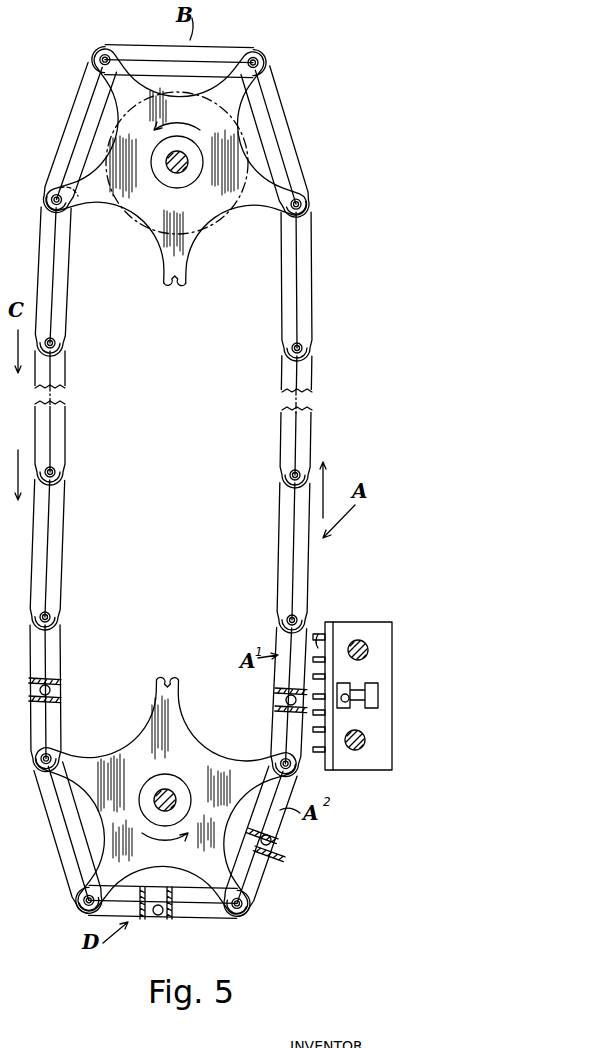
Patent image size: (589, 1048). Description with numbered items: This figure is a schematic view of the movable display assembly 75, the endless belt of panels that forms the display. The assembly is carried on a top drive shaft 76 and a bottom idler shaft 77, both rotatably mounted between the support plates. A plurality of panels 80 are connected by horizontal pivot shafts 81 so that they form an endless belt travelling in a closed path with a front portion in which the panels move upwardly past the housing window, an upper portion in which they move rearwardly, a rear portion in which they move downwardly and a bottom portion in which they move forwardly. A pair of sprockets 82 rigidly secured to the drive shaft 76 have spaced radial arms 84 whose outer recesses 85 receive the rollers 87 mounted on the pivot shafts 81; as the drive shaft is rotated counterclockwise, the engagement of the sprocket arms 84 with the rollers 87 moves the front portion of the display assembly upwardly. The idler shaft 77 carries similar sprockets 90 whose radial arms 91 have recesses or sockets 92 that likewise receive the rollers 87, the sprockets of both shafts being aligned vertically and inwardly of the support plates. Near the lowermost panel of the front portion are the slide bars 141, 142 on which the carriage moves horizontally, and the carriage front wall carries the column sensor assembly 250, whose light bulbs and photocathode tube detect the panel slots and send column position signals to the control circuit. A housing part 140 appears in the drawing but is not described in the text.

The movable display assembly 75 is at (72, 918).
The top drive shaft 76 is at (175, 164).
The bottom idler shaft 77 is at (165, 800).
The panels 80 is at (310, 159).
The horizontal pivot shafts 81 is at (310, 200).
The sprockets 82 is at (205, 207).
The radial arms 84 is at (73, 197).
The outer recesses 85 is at (177, 281).
The rollers 87 is at (101, 53).
The sprockets 90 is at (183, 752).
The radial arms 91 is at (177, 695).
The recesses or sockets 92 is at (168, 676).
The switch housing 140 is at (377, 771).
The slide bar 141 is at (372, 623).
The slide bar 142 is at (355, 752).
The sensor assembly 250 is at (318, 640).